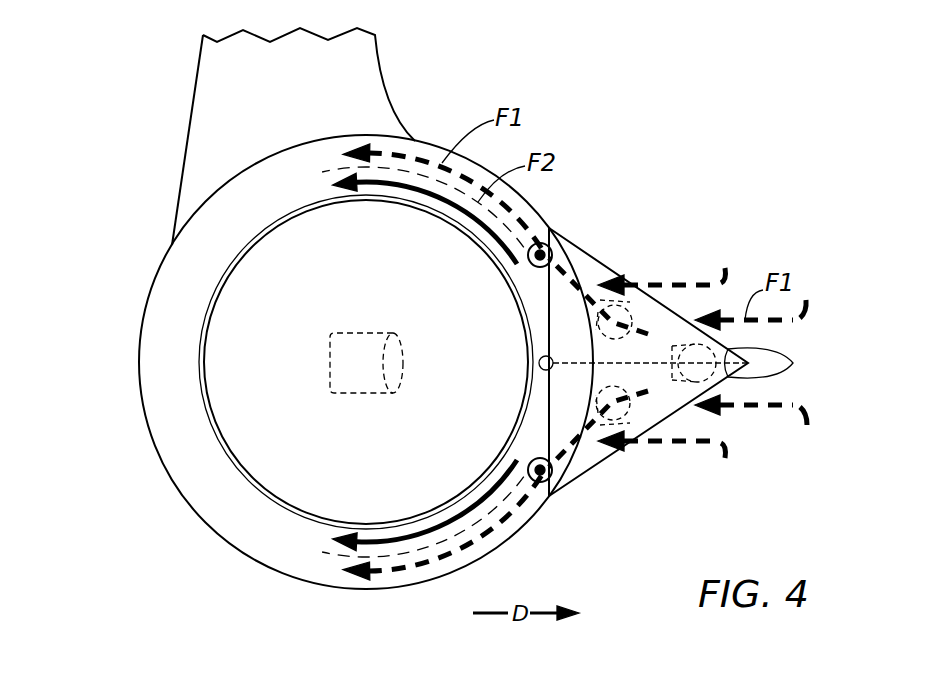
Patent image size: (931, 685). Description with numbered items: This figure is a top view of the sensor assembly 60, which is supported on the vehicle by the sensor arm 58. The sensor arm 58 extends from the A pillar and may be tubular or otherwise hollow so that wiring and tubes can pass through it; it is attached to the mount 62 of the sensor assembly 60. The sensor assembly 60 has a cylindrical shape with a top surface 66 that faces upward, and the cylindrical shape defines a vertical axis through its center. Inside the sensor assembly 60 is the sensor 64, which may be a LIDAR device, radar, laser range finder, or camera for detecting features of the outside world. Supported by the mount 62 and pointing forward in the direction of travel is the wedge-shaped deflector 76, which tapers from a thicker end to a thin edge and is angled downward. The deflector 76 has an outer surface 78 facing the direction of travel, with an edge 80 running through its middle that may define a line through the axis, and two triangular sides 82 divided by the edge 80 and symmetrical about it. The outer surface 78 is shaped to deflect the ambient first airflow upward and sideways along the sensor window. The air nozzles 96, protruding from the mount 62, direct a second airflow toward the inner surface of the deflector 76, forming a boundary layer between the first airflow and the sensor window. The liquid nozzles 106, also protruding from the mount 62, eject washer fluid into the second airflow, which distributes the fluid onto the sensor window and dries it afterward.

The sensor arm 58 is at (202, 82).
The sensor assembly 60 is at (68, 140).
The mount 62 is at (247, 553).
The sensor 64 is at (350, 333).
The top surface 66 is at (235, 467).
The deflector 76 is at (562, 233).
The outer surface 78 is at (598, 262).
The edge 80 is at (557, 366).
The sides 82 is at (793, 363).
The air nozzles 96 is at (683, 345).
The liquid nozzles 106 is at (530, 472).